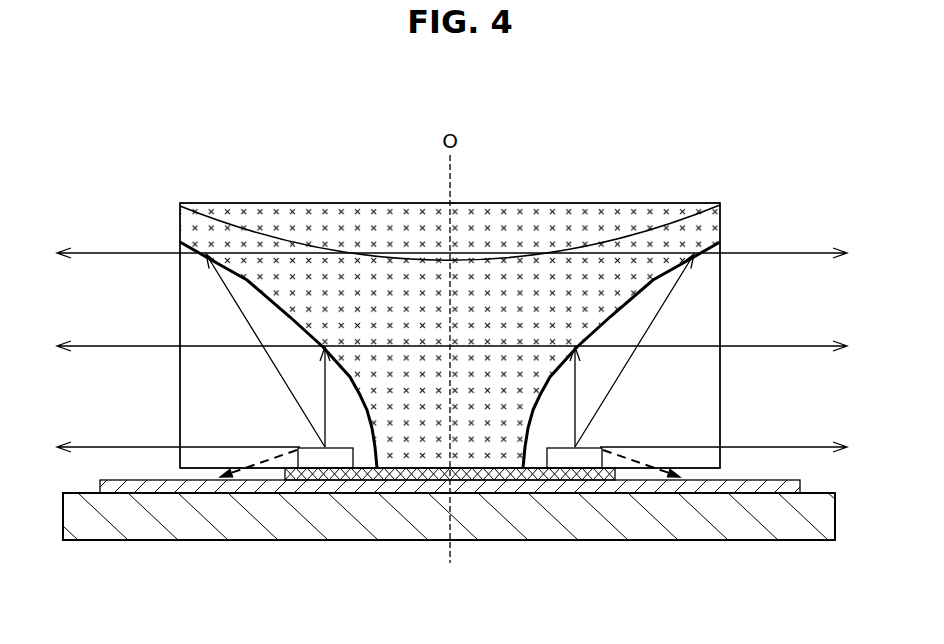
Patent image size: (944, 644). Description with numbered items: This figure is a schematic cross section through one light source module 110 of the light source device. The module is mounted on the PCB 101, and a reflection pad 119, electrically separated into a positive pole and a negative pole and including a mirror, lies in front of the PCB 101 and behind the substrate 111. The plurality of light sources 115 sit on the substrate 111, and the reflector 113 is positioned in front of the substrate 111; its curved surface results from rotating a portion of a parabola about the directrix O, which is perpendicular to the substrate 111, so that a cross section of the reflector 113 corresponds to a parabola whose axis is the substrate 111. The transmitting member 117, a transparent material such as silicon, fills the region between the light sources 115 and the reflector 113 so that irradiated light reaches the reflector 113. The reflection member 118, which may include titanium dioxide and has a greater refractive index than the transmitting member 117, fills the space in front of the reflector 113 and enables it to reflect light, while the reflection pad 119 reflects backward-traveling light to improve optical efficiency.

The light source module 110 is at (250, 177).
The PCB 101 is at (368, 518).
The substrate 111 is at (492, 480).
The reflector 113 is at (648, 280).
The light sources 115 is at (570, 458).
The transmitting member 117 is at (710, 395).
The reflection member 118 is at (553, 227).
The reflection pad 119 is at (258, 487).